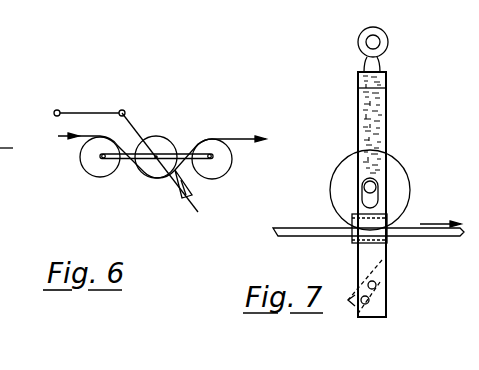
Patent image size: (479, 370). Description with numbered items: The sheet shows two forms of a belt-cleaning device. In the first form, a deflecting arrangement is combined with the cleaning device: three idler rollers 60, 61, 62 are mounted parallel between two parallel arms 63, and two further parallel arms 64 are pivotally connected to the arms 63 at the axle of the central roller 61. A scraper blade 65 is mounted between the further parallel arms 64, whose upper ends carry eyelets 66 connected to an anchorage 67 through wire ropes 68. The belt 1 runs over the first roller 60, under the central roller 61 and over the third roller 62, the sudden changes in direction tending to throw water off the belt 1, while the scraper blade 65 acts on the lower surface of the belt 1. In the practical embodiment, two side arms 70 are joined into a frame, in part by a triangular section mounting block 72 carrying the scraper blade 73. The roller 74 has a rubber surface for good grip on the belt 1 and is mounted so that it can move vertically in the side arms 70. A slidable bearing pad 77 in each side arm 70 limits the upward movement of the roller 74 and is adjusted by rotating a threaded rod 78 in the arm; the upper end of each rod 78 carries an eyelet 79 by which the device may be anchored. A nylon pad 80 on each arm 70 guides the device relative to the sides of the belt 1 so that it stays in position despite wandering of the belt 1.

In FIG. 6, the belt 1 is at (80, 137).
In FIG. 7, the belt 1 is at (285, 237).
In FIG. 6, the first idler roller 60 is at (97, 174).
In FIG. 6, the central roller 61 is at (152, 176).
In FIG. 6, the third idler roller 62 is at (222, 176).
In FIG. 6, the parallel arms 63 is at (122, 160).
In FIG. 6, the further parallel arms 64 is at (134, 129).
In FIG. 6, the scraper blade 65 is at (183, 188).
In FIG. 6, the eyelets 66 is at (123, 110).
In FIG. 6, the anchorage 67 is at (56, 110).
In FIG. 6, the wire ropes 68 is at (88, 112).
In FIG. 7, the side arms 70 is at (388, 100).
In FIG. 7, the triangular section mounting block 72 is at (384, 270).
In FIG. 7, the scraper blade 73 is at (386, 245).
In FIG. 7, the roller 74 is at (400, 178).
In FIG. 7, the slidable bearing pad 77 is at (378, 188).
In FIG. 7, the threaded rod 78 is at (382, 67).
In FIG. 7, the eyelet 79 is at (389, 42).
In FIG. 7, the nylon pad 80 is at (352, 243).